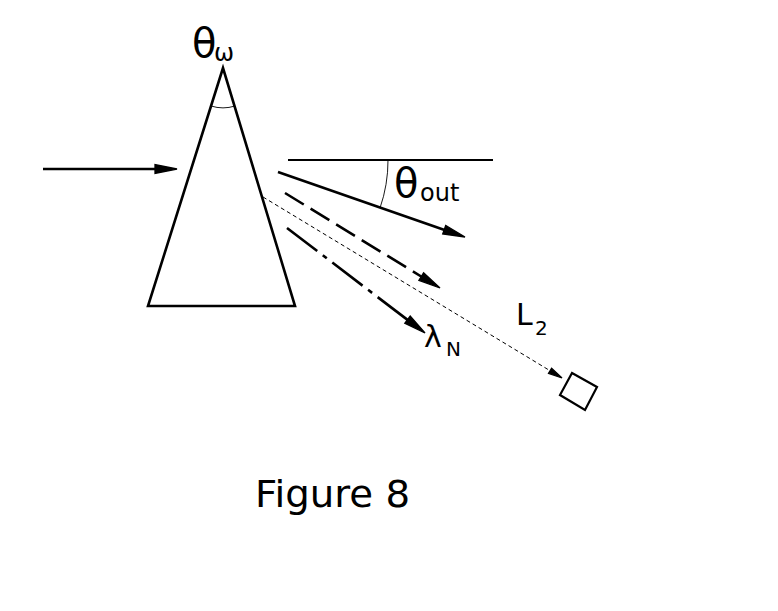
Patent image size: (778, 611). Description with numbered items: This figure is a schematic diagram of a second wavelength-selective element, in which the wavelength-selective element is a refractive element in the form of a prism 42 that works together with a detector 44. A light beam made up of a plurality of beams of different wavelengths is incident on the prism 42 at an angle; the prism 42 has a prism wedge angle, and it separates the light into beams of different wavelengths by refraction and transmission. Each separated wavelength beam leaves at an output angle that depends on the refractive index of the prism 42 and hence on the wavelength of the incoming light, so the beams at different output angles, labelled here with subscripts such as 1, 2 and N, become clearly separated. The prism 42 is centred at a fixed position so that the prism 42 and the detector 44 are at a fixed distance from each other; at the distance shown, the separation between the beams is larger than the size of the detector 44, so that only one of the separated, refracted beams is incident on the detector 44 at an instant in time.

The prism 42 is at (174, 328).
The detector 44 is at (558, 416).
The first wavelength beam 1 is at (389, 214).
The second wavelength beam 2 is at (379, 252).